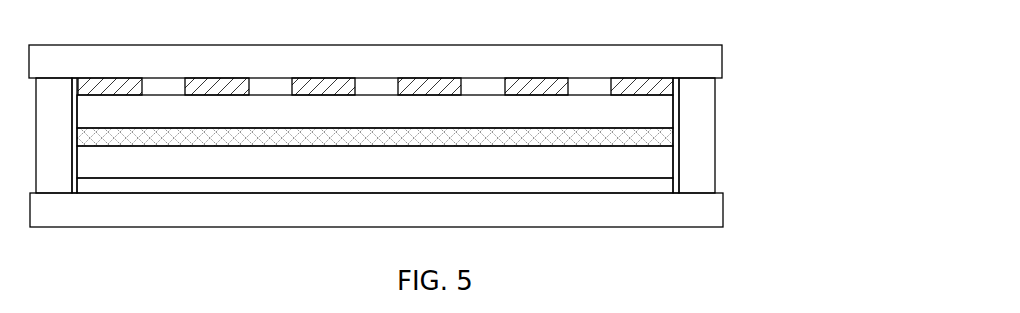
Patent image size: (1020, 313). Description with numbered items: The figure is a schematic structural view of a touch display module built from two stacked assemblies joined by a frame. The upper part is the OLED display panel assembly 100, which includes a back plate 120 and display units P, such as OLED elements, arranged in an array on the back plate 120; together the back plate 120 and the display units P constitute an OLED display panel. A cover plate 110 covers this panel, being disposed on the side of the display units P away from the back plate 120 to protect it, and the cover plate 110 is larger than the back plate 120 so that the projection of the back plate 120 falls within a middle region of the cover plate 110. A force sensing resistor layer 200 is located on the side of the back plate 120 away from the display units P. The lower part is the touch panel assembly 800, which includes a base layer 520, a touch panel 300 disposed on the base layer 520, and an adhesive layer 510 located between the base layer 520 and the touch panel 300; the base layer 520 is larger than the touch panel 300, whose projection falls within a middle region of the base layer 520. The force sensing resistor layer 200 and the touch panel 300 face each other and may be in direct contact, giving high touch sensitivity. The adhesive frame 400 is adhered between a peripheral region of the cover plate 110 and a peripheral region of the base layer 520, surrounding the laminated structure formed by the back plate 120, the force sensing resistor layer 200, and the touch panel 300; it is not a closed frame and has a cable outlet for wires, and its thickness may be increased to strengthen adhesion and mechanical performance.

The OLED display panel assembly 100 is at (468, 95).
The cover plate 110 is at (712, 53).
The display units P is at (673, 86).
The back plate 120 is at (645, 110).
The force sensing resistor layer 200 is at (673, 136).
The adhesive frame 400 is at (700, 147).
The touch panel assembly 800 is at (465, 162).
The touch panel 300 is at (673, 162).
The adhesive layer 510 is at (675, 192).
The base layer 520 is at (700, 213).